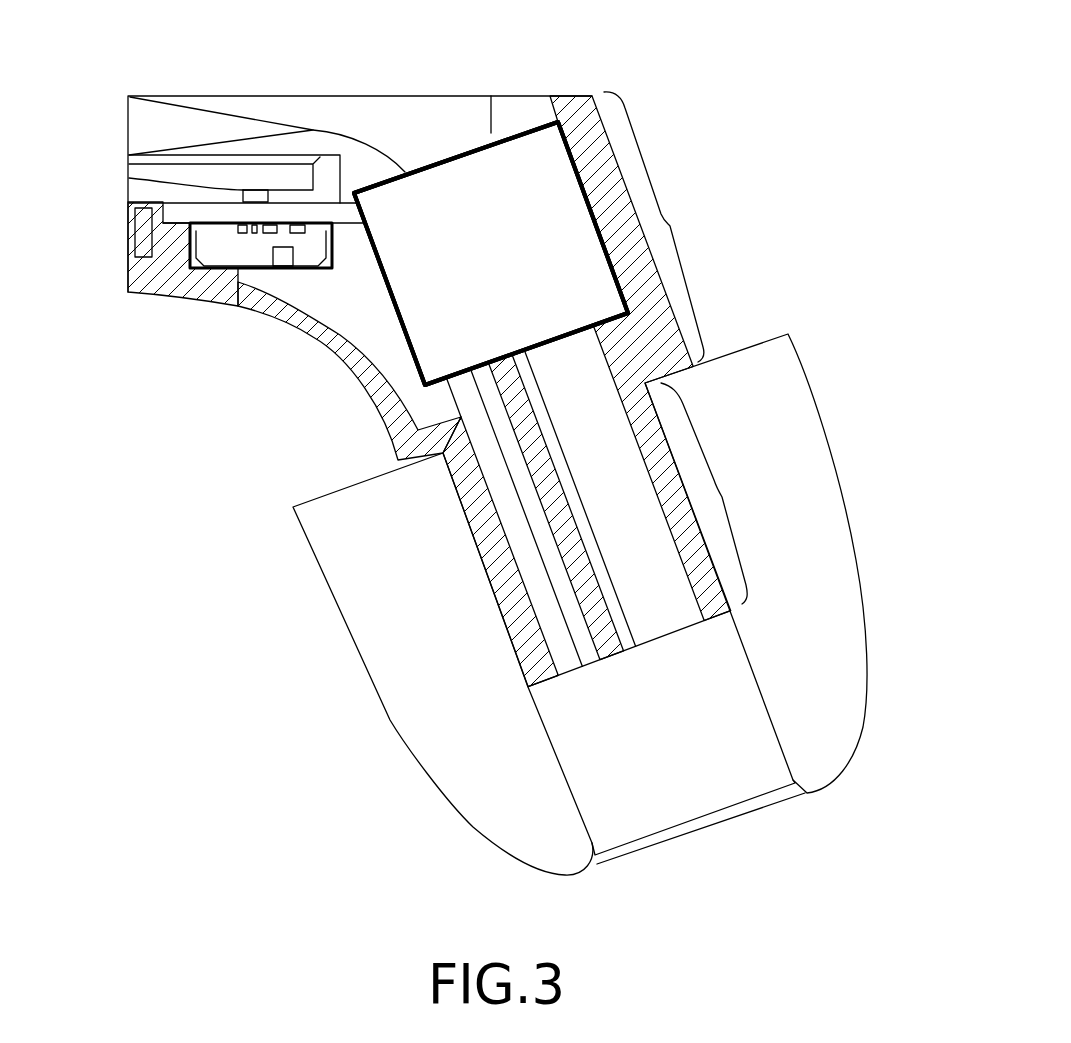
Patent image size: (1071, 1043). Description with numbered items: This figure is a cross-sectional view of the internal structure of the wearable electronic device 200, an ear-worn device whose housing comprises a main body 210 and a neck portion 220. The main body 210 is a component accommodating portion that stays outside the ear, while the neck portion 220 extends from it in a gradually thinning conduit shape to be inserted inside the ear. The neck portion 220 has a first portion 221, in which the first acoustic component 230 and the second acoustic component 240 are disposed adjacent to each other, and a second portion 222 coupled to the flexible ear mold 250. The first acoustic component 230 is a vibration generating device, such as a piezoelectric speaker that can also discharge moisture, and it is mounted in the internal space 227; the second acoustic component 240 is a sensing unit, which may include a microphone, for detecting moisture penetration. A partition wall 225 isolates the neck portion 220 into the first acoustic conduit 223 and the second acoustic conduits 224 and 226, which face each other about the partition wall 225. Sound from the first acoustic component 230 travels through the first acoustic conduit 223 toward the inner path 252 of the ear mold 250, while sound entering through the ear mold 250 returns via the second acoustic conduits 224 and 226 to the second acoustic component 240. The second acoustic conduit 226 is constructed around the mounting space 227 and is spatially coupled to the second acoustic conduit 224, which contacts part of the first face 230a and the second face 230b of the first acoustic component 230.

The wearable electronic device 200 is at (780, 228).
The main body 210 is at (106, 270).
The neck portion 220 is at (722, 301).
The first portion 221 is at (668, 222).
The second portion 222 is at (718, 487).
The first acoustic conduit 223 is at (623, 503).
The second acoustic conduit 224 is at (527, 575).
The partition wall 225 is at (600, 637).
The second acoustic conduit 226 is at (357, 310).
The internal space 227 is at (658, 638).
The first acoustic component 230 is at (520, 157).
The first face 230a is at (457, 370).
The second face 230b is at (390, 298).
The second acoustic component 240 is at (230, 248).
The ear mold 250 is at (827, 622).
The inner path 252 is at (695, 735).